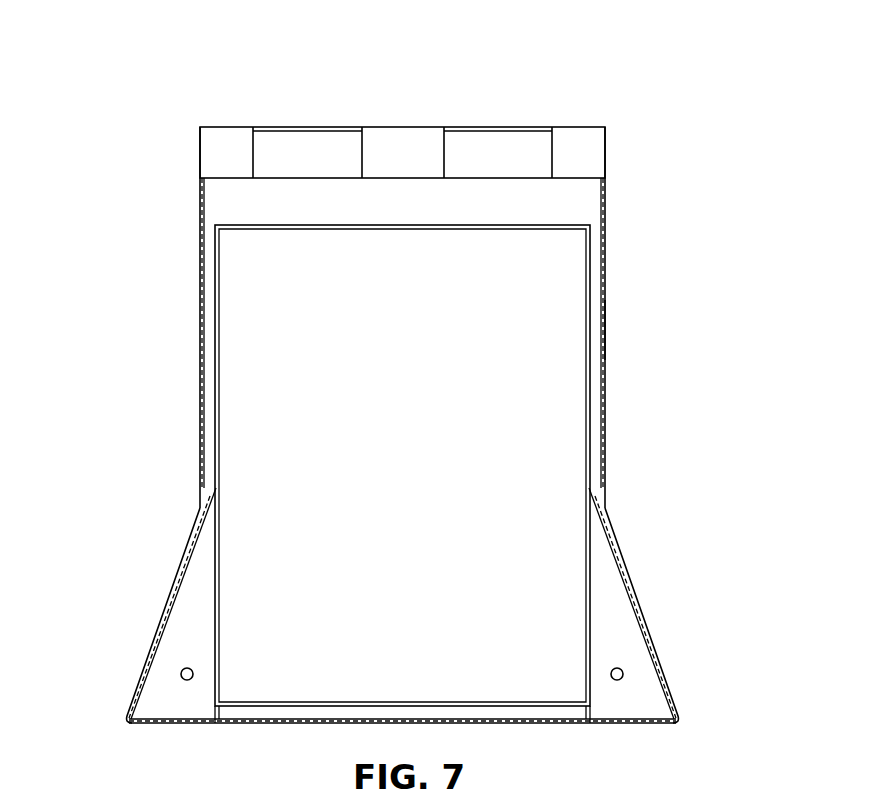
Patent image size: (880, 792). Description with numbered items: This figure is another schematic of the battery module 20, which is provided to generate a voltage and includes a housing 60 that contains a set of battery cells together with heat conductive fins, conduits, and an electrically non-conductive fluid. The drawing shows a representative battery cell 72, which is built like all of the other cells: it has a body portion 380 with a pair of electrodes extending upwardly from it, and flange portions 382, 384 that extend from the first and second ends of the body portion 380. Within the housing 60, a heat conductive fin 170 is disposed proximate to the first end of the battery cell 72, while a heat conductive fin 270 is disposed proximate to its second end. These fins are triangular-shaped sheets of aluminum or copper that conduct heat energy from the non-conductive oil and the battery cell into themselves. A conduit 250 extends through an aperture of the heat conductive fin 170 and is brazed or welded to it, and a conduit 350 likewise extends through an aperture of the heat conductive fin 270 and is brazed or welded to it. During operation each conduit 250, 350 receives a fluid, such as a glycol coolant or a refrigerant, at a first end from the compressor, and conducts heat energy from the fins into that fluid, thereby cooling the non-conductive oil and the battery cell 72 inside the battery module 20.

The battery module 20 is at (584, 98).
The housing 60 is at (607, 151).
The battery cell 72 is at (606, 328).
The heat conductive fin 170 is at (632, 655).
The conduit 250 is at (640, 681).
The heat conductive fin 270 is at (160, 693).
The conduit 350 is at (187, 667).
The body portion 380 is at (557, 453).
The flange portion 382 is at (213, 286).
The flange portion 384 is at (594, 247).